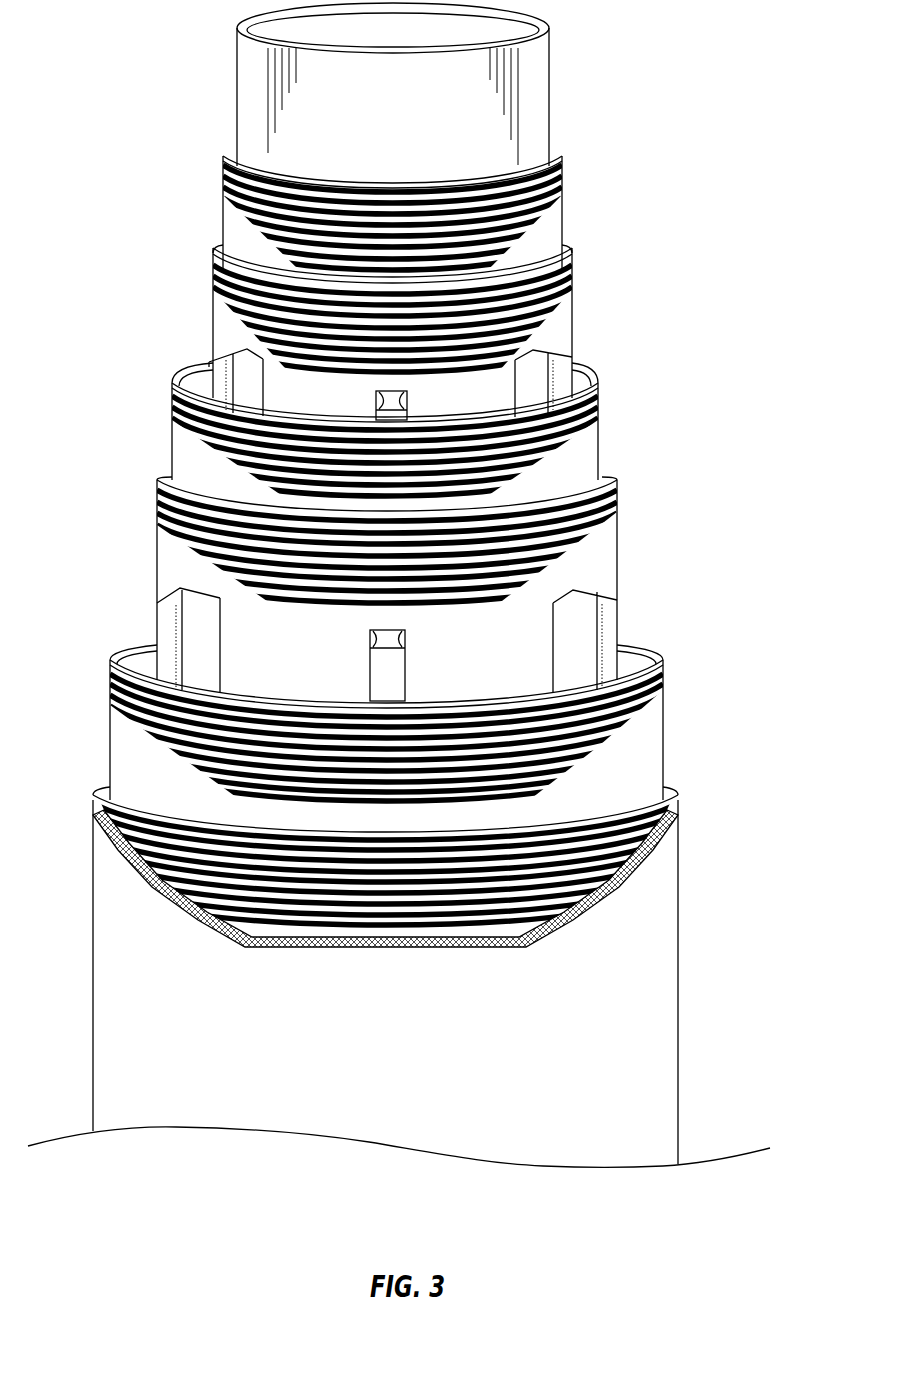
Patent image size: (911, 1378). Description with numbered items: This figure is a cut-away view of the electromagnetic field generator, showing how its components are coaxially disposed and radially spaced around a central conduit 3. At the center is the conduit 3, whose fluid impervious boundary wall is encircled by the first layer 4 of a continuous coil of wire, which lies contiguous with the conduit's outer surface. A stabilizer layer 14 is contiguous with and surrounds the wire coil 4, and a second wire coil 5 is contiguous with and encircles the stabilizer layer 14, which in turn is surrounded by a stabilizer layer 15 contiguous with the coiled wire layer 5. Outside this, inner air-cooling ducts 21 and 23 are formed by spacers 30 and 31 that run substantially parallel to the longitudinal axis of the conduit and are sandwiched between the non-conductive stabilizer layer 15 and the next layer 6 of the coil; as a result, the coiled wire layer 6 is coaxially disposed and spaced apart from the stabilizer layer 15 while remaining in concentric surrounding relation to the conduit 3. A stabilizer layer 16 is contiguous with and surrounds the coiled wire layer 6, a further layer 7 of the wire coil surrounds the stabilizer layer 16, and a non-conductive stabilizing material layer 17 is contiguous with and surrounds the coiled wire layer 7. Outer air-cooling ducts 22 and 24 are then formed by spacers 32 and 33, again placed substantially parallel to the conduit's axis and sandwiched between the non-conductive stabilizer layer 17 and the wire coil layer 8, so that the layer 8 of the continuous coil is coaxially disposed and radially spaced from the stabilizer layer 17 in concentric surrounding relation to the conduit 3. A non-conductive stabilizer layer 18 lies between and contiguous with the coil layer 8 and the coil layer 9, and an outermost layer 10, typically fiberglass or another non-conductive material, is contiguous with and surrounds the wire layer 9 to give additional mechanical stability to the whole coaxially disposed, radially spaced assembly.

The conduit 3 is at (401, 136).
The layer of the continuous coil of wire 4 is at (552, 164).
The stabilizer layer 14 is at (551, 218).
The wire coil layer 5 is at (573, 266).
The stabilizer layer 15 is at (558, 330).
The layer of the continuous coil of wire 6 is at (602, 420).
The stabilizer layer 16 is at (568, 453).
The layer of the wire coil 7 is at (617, 503).
The non-conductive stabilizing material layer 17 is at (600, 557).
The layer of the continuous coil of wire 8 is at (653, 683).
The non-conductive stabilizer layer 18 is at (652, 737).
The layer of the continuous coil of wire 9 is at (662, 812).
The outer non-conductive layer 10 is at (660, 877).
The inner air-cooling duct 21 is at (282, 405).
The outer air-cooling duct 22 is at (260, 633).
The inner air-cooling duct 23 is at (493, 390).
The outer air-cooling duct 24 is at (518, 623).
The spacer 30 is at (222, 357).
The spacer 31 is at (377, 402).
The spacer 32 is at (175, 603).
The spacer 33 is at (373, 637).